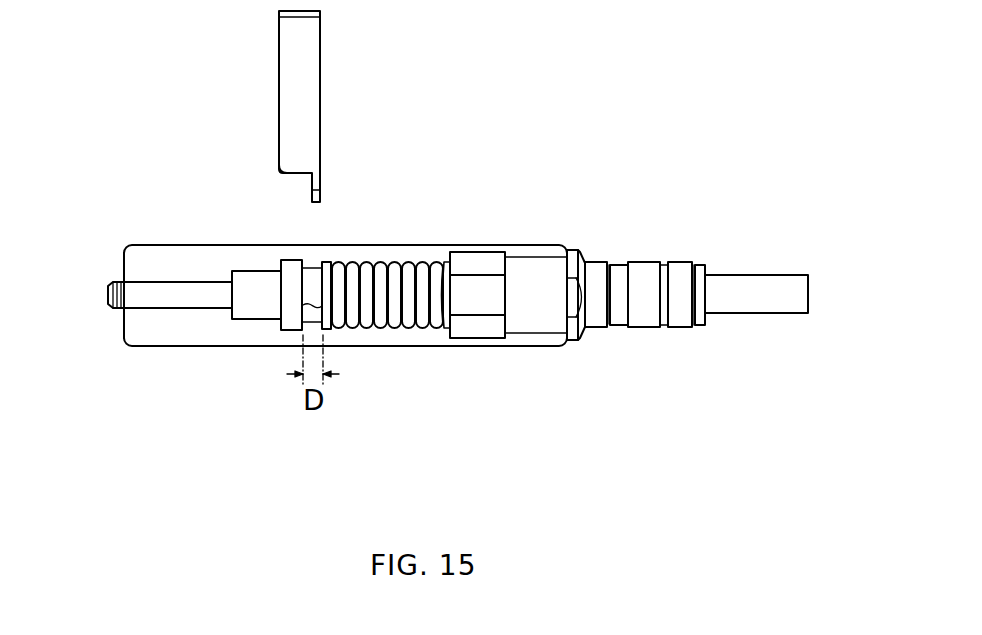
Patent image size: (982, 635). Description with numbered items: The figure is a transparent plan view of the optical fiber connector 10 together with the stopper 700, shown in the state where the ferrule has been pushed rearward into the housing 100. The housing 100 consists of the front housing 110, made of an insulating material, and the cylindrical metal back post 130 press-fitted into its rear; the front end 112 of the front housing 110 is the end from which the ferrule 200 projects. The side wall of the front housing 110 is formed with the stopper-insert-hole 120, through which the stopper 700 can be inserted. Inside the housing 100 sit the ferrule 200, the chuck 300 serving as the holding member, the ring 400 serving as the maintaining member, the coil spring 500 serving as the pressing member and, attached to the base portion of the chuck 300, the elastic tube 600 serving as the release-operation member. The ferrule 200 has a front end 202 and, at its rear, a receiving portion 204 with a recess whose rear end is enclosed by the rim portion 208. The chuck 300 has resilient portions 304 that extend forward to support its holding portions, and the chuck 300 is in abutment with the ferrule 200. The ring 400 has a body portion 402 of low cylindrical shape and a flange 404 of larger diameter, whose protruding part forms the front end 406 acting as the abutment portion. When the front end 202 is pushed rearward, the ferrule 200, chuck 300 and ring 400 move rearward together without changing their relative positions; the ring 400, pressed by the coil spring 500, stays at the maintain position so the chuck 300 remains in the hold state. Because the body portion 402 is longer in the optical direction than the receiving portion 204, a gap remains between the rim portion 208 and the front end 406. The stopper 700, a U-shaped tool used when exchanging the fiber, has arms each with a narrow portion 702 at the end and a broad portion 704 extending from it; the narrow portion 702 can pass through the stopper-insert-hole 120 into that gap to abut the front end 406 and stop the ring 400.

The optical fiber connector 10 is at (487, 142).
The housing 100 is at (366, 338).
The front housing 110 is at (555, 347).
The front end 112 is at (123, 265).
The stopper-insert-hole 120 is at (313, 245).
The back post 130 is at (645, 328).
The ferrule 200 is at (134, 341).
The front end 202 is at (107, 303).
The receiving portion 204 is at (295, 333).
The rim portion 208 is at (300, 310).
The chuck 300 is at (402, 386).
The resilient portion 304 is at (412, 328).
The ring 400 is at (208, 314).
The body portion 402 is at (291, 295).
The flange 404 is at (328, 322).
The front end 406 is at (361, 356).
The coil spring 500 is at (436, 330).
The tube 600 is at (748, 313).
The stopper 700 is at (309, 110).
The narrow portion 702 is at (317, 191).
The broad portion 704 is at (295, 163).